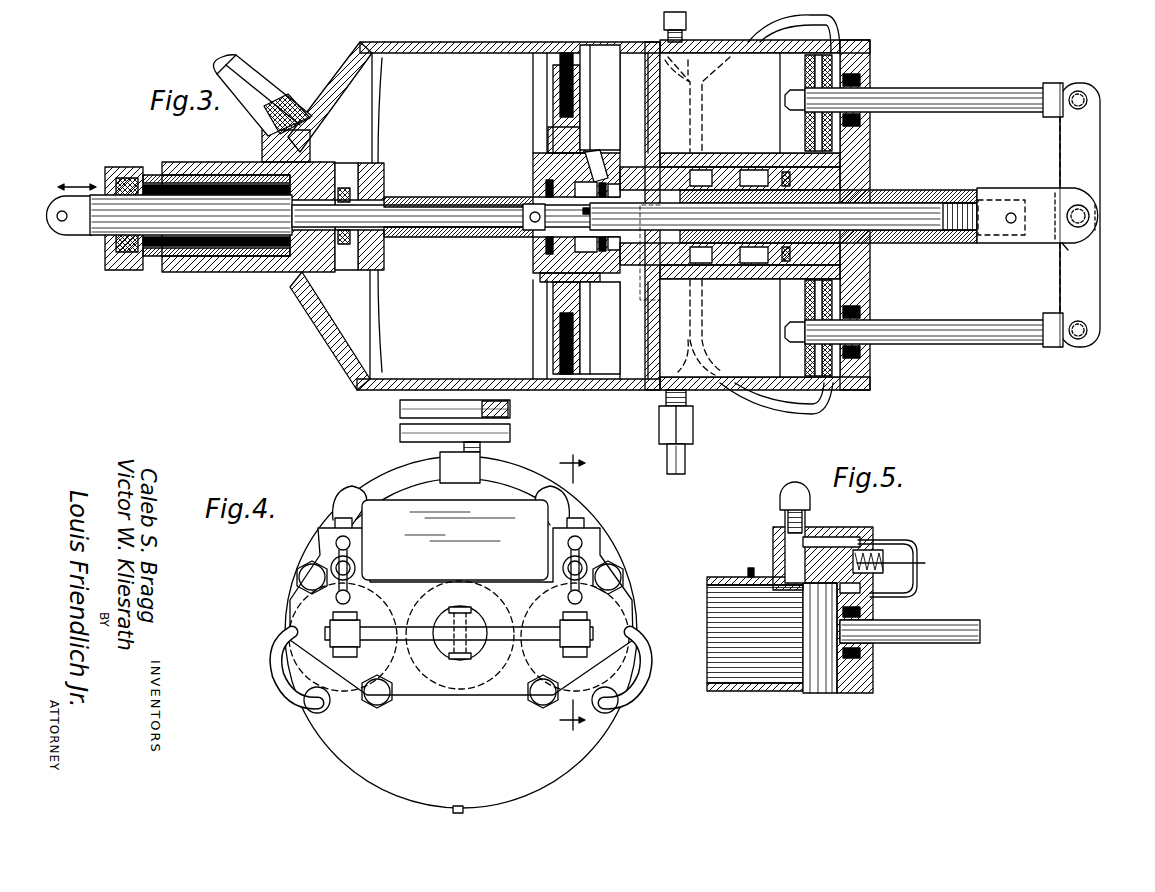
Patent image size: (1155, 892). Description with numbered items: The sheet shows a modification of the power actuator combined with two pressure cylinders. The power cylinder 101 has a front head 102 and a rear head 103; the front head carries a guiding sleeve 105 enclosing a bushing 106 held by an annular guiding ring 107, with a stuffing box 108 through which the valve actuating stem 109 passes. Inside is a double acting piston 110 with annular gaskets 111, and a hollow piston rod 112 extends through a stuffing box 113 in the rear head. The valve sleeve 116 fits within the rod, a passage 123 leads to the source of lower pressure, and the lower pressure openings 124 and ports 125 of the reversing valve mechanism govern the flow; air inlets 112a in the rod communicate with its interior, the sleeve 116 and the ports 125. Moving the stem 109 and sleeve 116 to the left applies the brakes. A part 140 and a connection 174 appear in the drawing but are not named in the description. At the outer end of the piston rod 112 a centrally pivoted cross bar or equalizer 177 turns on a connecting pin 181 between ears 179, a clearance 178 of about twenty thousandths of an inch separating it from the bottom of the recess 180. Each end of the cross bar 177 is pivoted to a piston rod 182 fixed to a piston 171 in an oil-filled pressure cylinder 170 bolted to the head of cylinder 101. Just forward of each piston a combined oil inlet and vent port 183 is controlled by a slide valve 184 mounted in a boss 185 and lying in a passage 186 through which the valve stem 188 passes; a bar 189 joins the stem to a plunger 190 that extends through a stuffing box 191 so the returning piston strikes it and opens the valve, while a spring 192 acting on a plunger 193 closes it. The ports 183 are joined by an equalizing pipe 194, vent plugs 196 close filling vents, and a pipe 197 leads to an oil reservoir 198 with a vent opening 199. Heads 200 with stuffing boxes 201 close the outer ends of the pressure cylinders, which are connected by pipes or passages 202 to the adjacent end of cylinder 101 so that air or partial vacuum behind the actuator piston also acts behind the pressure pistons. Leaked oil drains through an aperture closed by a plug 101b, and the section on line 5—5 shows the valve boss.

In FIG. 3, the power actuator cylinder 101 is at (475, 42).
In FIG. 4, the drain plug 101b is at (463, 810).
In FIG. 3, the front head 102 is at (308, 82).
In FIG. 3, the rear head 103 is at (702, 90).
In FIG. 3, the guiding sleeve 105 is at (224, 162).
In FIG. 3, the bushing 106 is at (175, 175).
In FIG. 3, the annular guiding ring 107 is at (350, 272).
In FIG. 3, the stuffing box 108 is at (118, 270).
In FIG. 3, the valve actuating stem 109 is at (92, 235).
In FIG. 3, the double acting piston 110 is at (553, 135).
In FIG. 3, the annular gaskets 111 is at (566, 53).
In FIG. 3, the hollow piston rod 112 is at (912, 243).
In FIG. 3, the air inlets 112a is at (1012, 213).
In FIG. 3, the stuffing box 113 is at (770, 265).
In FIG. 3, the valve sleeve 116 is at (468, 237).
In FIG. 3, the passage to source of lower pressure 123 is at (240, 56).
In FIG. 3, the lower pressure openings 124 is at (550, 237).
In FIG. 3, the ports of reversing valve mechanism 125 is at (598, 282).
In FIG. 3, the valve body 140 is at (543, 278).
In FIG. 3, the pressure cylinder 170 is at (712, 53).
In FIG. 5, the pressure cylinder 170 is at (740, 690).
In FIG. 3, the pressure piston 171 is at (830, 68).
In FIG. 5, the pressure piston 171 is at (815, 690).
In FIG. 3, the pipe connection 174 is at (664, 22).
In FIG. 3, the cross bar or equalizer 177 is at (1090, 165).
In FIG. 4, the cross bar or equalizer 177 is at (420, 630).
In FIG. 3, the clearance 178 is at (1055, 225).
In FIG. 3, the ears 179 is at (1092, 212).
In FIG. 4, the ears 179 is at (449, 650).
In FIG. 3, the recess 180 is at (1068, 250).
In FIG. 3, the connecting pin 181 is at (1088, 224).
In FIG. 3, the piston rod 182 is at (966, 90).
In FIG. 5, the piston rod 182 is at (935, 643).
In FIG. 5, the combined oil inlet and vent port 183 is at (788, 550).
In FIG. 4, the slide valve 184 is at (336, 566).
In FIG. 5, the slide valve 184 is at (862, 527).
In FIG. 4, the boss 185 is at (338, 538).
In FIG. 5, the boss 185 is at (785, 525).
In FIG. 5, the passage 186 is at (822, 537).
In FIG. 5, the valve stem 188 is at (910, 541).
In FIG. 5, the bar 189 is at (916, 590).
In FIG. 5, the plunger 190 is at (876, 626).
In FIG. 5, the stuffing box 191 is at (873, 583).
In FIG. 5, the spring 192 is at (881, 558).
In FIG. 5, the plunger 193 is at (905, 572).
In FIG. 4, the equalizing pipe 194 is at (525, 478).
In FIG. 5, the vent plug 196 is at (748, 574).
In FIG. 3, the pipe 197 is at (464, 446).
In FIG. 3, the oil reservoir 198 is at (400, 432).
In FIG. 3, the vent opening 199 is at (500, 402).
In FIG. 3, the pressure cylinder head 200 is at (868, 150).
In FIG. 3, the stuffing box 201 is at (870, 72).
In FIG. 3, the pipe or passage 202 is at (832, 20).
In FIG. 4, the pipe or passage 202 is at (286, 690).
In FIG. 4, the section line 5— 5 is at (572, 595).